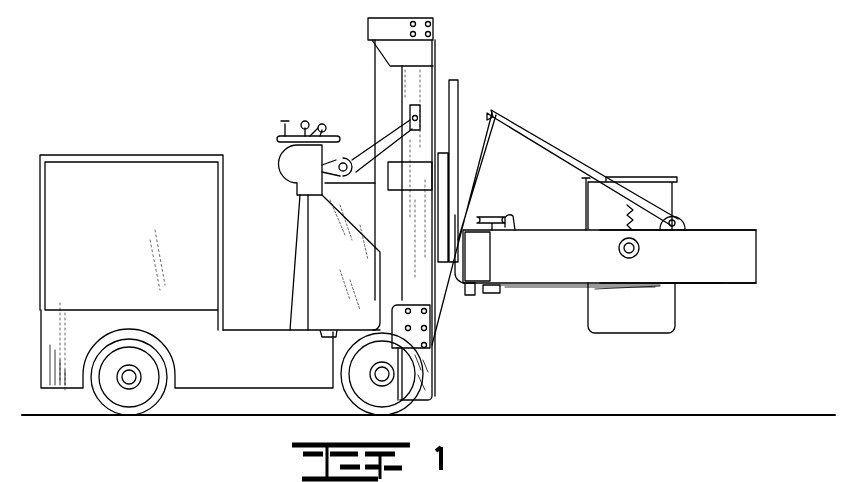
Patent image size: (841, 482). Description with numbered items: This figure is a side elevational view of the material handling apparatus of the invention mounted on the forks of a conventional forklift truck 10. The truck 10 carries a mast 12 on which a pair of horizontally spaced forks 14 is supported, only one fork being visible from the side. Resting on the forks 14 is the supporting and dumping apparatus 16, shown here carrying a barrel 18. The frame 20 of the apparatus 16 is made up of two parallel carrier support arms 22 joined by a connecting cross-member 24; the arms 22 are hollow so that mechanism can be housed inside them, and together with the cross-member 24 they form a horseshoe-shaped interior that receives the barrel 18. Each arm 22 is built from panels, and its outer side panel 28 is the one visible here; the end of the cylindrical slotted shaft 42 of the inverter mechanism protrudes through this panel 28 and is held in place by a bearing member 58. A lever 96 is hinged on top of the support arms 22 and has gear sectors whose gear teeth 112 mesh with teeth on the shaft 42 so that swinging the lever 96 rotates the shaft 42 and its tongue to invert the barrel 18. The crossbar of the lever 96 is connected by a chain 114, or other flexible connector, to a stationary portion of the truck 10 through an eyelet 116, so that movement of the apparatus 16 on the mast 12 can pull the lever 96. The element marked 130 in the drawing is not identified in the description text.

The forklift truck 10 is at (139, 148).
The mast 12 is at (436, 58).
The forks 14 is at (530, 286).
The supporting and dumping apparatus 16 is at (736, 283).
The barrel 18 is at (675, 190).
The frame 20 is at (718, 226).
The carrier support arms 22 is at (692, 276).
The connecting cross-member 24 is at (478, 222).
The outer side panels 28 is at (745, 242).
The cylindrical shaft 42 is at (640, 250).
The bearing member 58 is at (623, 254).
The lever 96 is at (530, 130).
The gear teeth 112 is at (626, 216).
The chain 114 is at (476, 182).
The eyelet 116 is at (432, 393).
The guard 130 is at (512, 216).